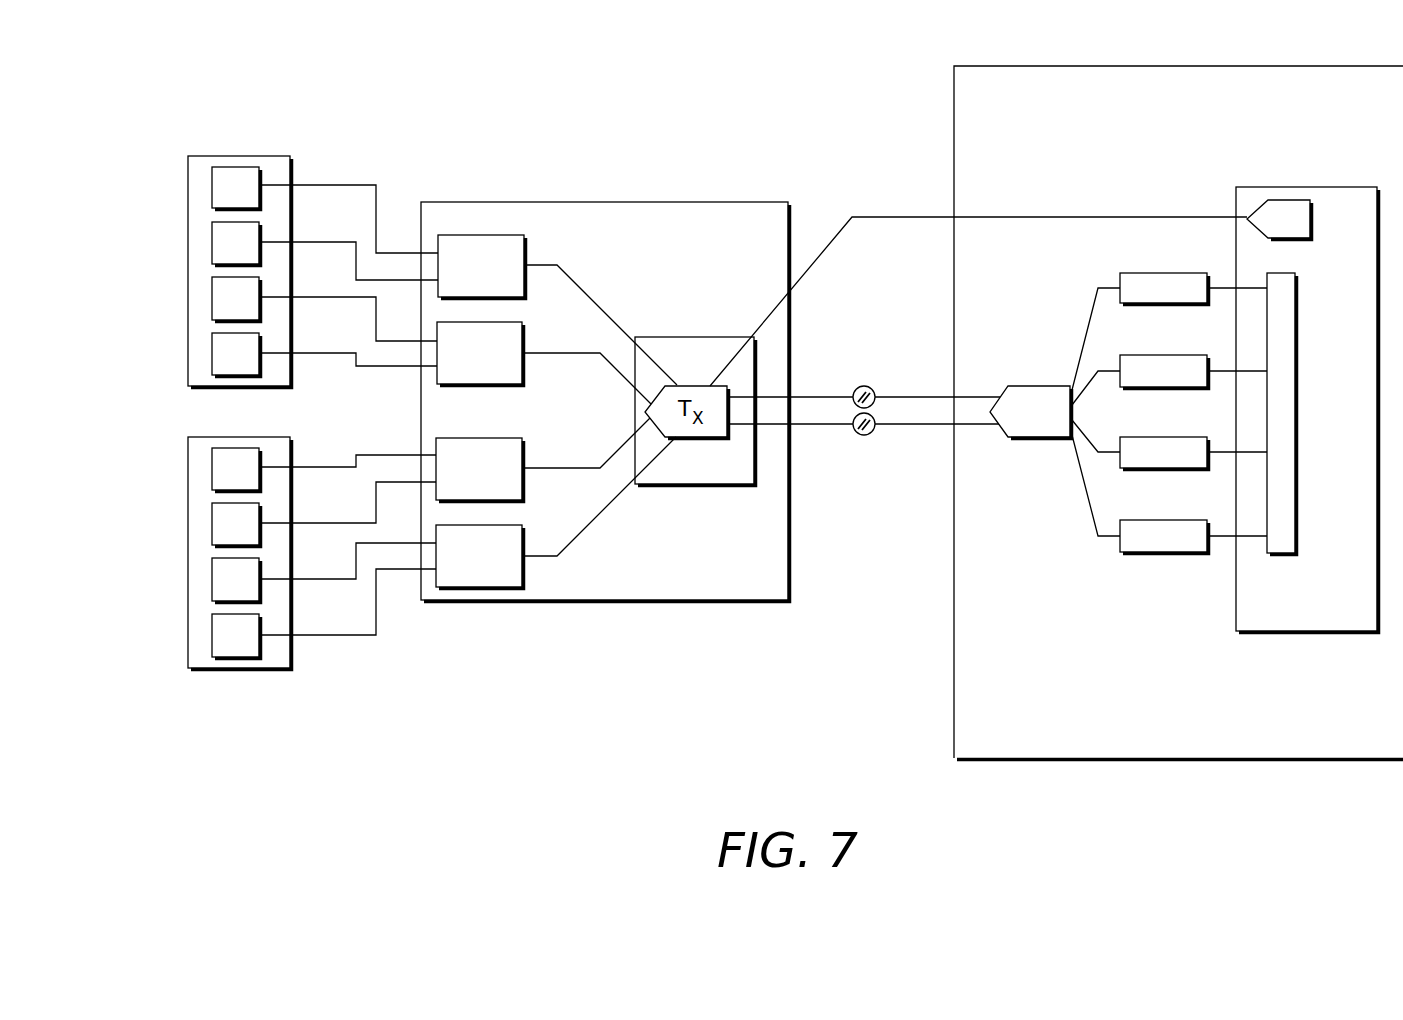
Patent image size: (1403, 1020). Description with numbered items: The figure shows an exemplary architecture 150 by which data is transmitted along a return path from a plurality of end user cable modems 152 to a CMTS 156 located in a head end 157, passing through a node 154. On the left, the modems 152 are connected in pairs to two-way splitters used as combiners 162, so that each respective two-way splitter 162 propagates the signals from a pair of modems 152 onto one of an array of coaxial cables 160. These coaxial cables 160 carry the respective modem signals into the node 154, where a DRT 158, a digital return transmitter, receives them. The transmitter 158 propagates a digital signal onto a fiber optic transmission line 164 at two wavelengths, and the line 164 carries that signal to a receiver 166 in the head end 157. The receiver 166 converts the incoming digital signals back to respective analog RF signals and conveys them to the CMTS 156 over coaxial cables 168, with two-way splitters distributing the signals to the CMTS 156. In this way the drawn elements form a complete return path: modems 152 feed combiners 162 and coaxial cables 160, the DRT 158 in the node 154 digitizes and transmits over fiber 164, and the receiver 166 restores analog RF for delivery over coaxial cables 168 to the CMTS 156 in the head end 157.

The architecture 150 is at (126, 104).
The end user cable modems 152 is at (212, 189).
The node 154 is at (703, 251).
The CMTS 156 is at (1361, 422).
The head end 157 is at (1048, 132).
The DRT 158 is at (708, 369).
The coaxial cables 160 is at (334, 185).
The two-way splitters used as combiners 162 is at (505, 235).
The fiber optic transmission line 164 is at (836, 396).
The receiver 166 is at (1041, 386).
The coaxial cables 168 is at (1221, 291).